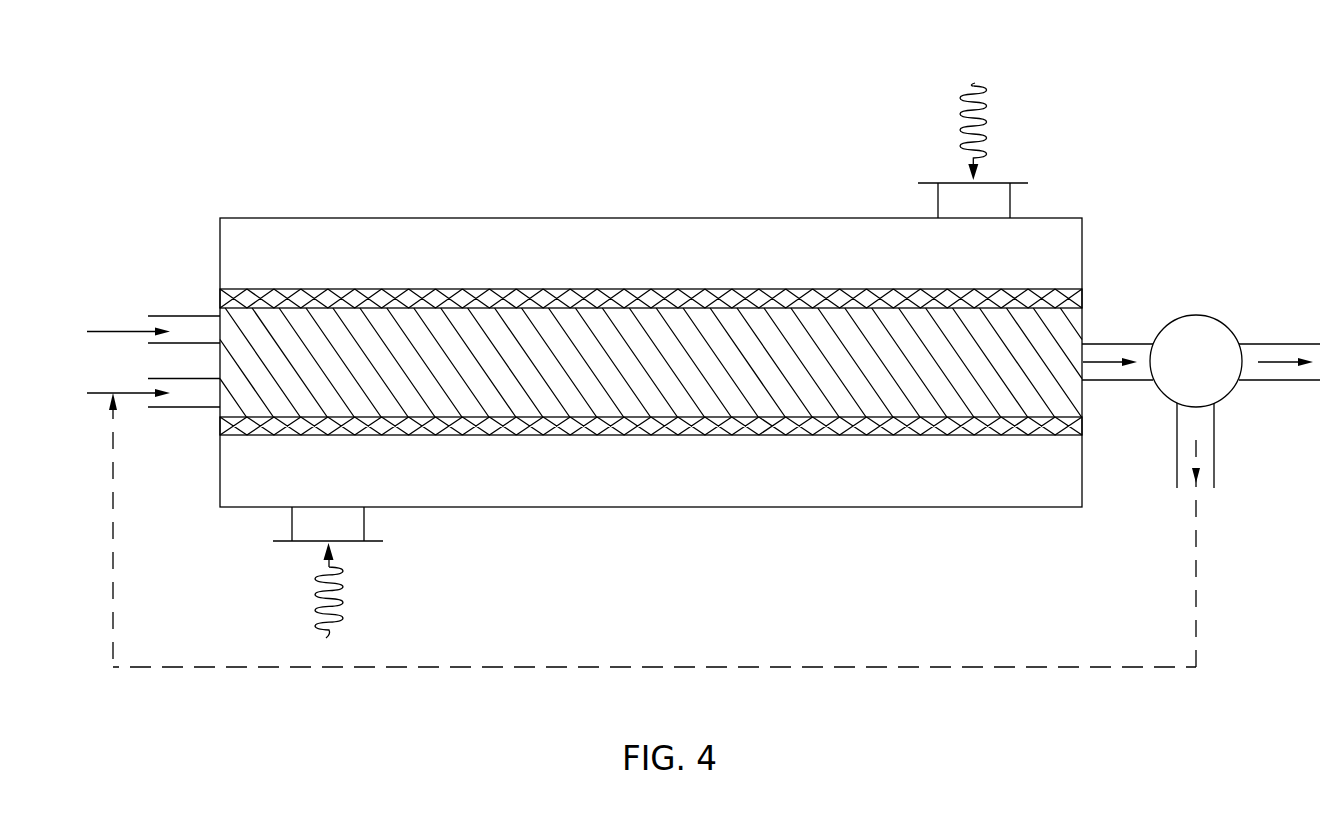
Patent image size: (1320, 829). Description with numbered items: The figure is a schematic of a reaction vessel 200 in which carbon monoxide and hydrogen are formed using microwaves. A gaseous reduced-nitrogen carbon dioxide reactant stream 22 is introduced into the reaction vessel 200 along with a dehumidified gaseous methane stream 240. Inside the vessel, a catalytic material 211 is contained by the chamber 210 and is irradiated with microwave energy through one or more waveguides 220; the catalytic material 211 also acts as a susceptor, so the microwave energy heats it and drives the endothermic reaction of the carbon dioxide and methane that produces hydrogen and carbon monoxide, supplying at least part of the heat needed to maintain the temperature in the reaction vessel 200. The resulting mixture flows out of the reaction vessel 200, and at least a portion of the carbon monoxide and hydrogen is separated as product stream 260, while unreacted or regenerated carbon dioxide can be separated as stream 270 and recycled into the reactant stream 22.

The reaction vessel 200 is at (343, 118).
The chamber 210 is at (768, 293).
The catalytic material 211 is at (672, 376).
The waveguide 220 is at (952, 202).
The dehumidified gaseous methane stream 240 is at (117, 332).
The gaseous reduced-nitrogen carbon dioxide reactant stream 22 is at (127, 394).
The product stream 260 is at (1272, 358).
The stream 270 is at (1198, 445).